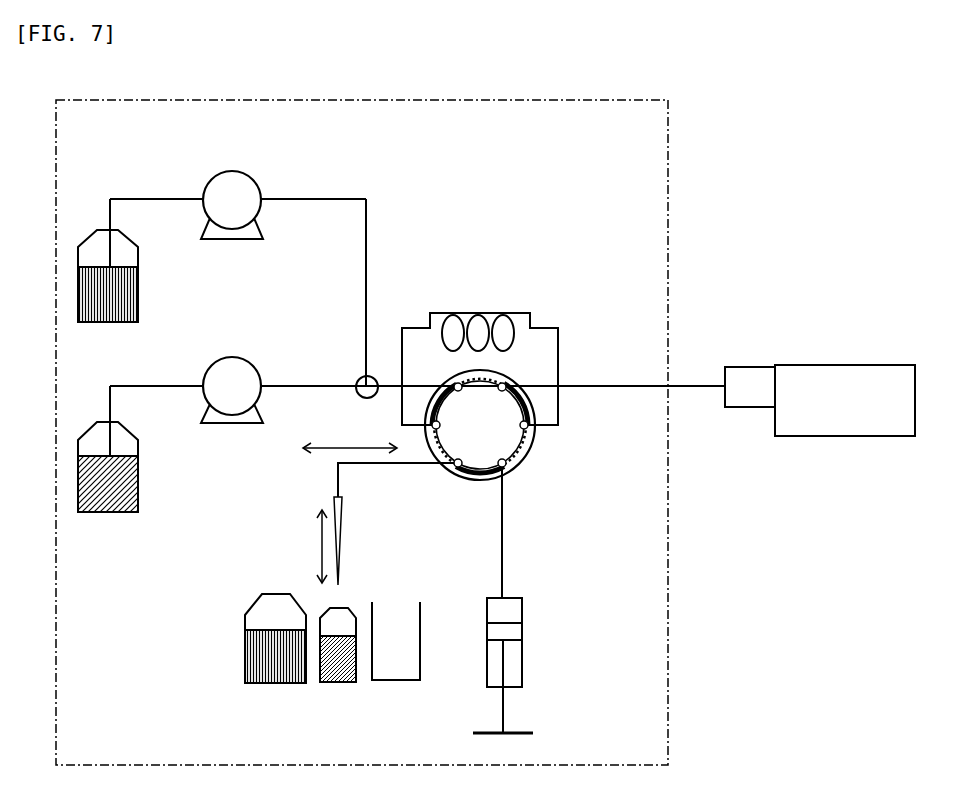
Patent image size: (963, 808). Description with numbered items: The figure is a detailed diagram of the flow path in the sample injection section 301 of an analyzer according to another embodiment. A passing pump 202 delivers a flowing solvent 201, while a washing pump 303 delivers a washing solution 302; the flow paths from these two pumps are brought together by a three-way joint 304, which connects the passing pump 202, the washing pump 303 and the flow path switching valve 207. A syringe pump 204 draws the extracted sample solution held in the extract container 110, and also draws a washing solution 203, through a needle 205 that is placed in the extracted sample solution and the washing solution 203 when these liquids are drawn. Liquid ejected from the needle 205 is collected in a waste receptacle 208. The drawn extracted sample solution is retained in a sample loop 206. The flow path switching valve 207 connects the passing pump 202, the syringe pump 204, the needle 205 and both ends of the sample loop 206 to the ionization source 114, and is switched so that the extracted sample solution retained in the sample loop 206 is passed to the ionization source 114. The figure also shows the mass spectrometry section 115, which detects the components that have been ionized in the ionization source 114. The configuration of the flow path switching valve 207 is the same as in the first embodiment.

The sample injection section 301 is at (668, 695).
The washing pump 303 is at (217, 183).
The passing pump 202 is at (215, 368).
The three-way joint 304 is at (356, 378).
The washing solution 302 is at (122, 322).
The flowing solvent 201 is at (122, 512).
The sample loop 206 is at (558, 350).
The flow path switching valve 207 is at (534, 452).
The needle 205 is at (347, 522).
The washing solution 203 is at (266, 683).
The extract container 110 is at (342, 682).
The waste receptacle 208 is at (396, 680).
The syringe pump 204 is at (522, 650).
The ionization source 114 is at (745, 407).
The mass spectrometry section 115 is at (865, 430).